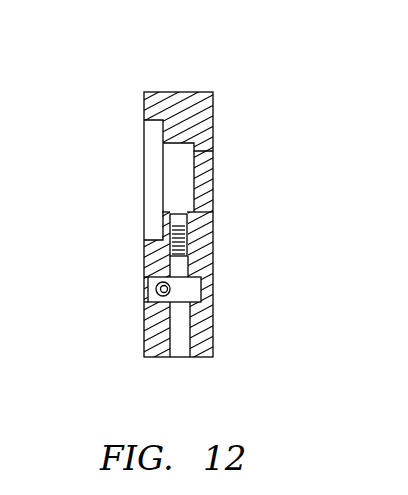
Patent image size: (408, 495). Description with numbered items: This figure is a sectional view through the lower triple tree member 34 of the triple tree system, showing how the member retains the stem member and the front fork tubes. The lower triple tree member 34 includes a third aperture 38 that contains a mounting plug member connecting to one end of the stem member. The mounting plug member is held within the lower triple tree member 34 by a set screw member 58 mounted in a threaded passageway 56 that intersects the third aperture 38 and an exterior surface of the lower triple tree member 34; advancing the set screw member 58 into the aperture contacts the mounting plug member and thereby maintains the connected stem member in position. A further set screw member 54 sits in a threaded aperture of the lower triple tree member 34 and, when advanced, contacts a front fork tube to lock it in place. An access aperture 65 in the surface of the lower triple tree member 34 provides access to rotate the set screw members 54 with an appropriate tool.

The lower triple tree member 34 is at (151, 209).
The third aperture 38 is at (244, 175).
The set screw member 58 is at (248, 246).
The threaded passageway 56 is at (237, 294).
The set screw member 54 is at (110, 319).
The access aperture 65 is at (94, 272).